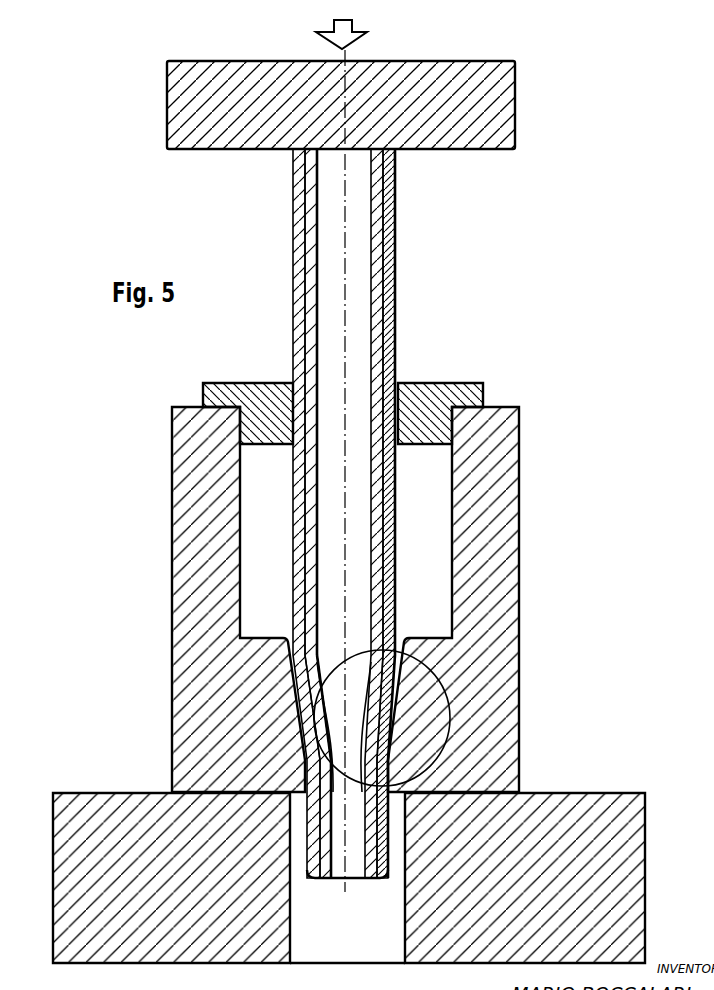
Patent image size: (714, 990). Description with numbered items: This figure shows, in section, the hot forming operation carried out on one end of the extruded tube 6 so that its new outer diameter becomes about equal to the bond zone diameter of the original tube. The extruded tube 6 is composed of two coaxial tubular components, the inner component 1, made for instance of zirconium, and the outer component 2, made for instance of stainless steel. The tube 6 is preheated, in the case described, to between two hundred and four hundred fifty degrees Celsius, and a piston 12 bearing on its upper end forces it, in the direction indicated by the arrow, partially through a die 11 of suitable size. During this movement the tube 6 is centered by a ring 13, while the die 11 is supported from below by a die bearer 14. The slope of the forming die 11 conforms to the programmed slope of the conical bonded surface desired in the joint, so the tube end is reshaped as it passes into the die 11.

The inner component 1 is at (377, 207).
The outer component 2 is at (393, 252).
The extruded tube 6 is at (357, 304).
The die 11 is at (482, 505).
The piston 12 is at (414, 107).
The ring 13 is at (420, 408).
The die bearer 14 is at (438, 910).